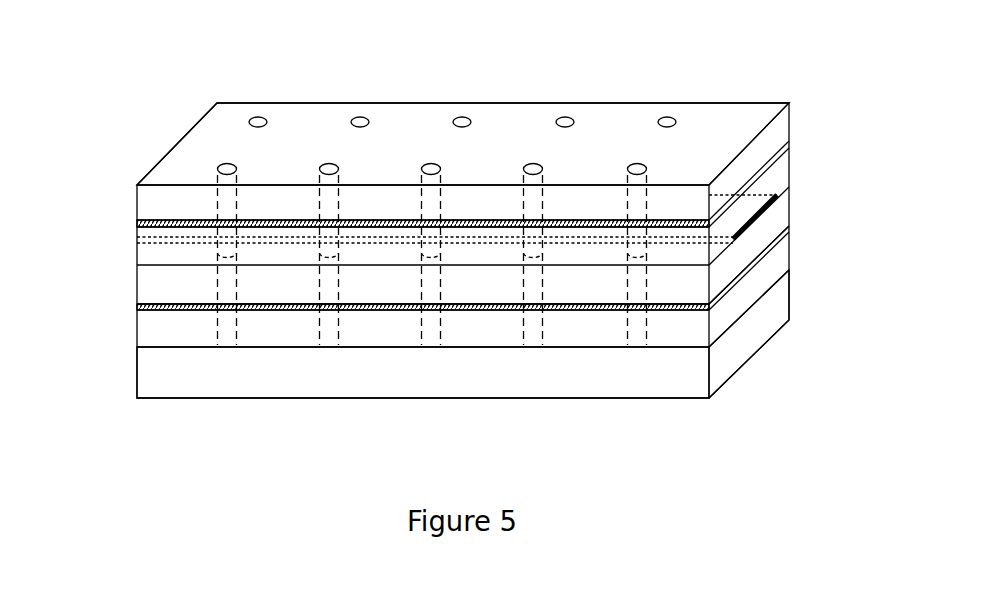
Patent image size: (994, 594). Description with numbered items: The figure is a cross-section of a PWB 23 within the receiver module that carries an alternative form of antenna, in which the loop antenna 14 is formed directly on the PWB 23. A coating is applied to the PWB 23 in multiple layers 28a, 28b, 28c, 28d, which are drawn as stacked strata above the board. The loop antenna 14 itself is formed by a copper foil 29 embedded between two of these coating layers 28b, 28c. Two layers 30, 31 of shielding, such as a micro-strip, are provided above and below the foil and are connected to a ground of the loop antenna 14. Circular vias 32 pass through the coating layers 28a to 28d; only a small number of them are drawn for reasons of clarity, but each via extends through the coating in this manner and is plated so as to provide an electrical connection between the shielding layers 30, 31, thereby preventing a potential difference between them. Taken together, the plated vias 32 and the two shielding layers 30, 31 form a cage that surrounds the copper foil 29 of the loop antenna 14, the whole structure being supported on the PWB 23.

The loop antenna 14 is at (742, 83).
The PWB 23 is at (738, 350).
The coating layer 28a is at (413, 108).
The coating layer 28b is at (137, 235).
The coating layer 28c is at (137, 278).
The coating layer 28d is at (752, 288).
The copper foil 29 is at (743, 238).
The shielding layer 30 is at (138, 220).
The shielding layer 31 is at (137, 310).
The via 32 is at (220, 165).